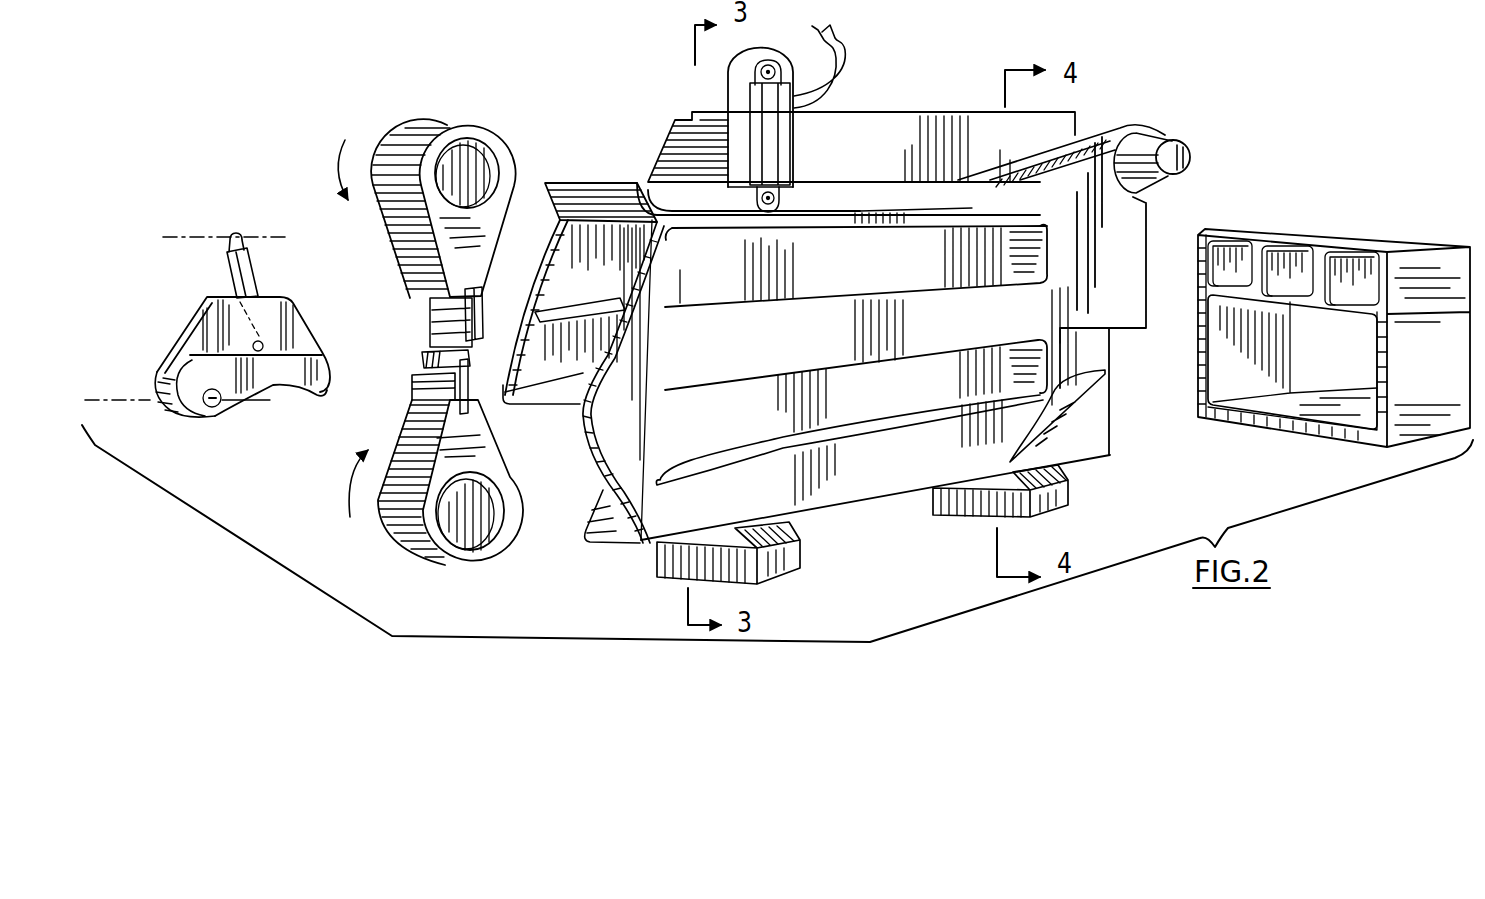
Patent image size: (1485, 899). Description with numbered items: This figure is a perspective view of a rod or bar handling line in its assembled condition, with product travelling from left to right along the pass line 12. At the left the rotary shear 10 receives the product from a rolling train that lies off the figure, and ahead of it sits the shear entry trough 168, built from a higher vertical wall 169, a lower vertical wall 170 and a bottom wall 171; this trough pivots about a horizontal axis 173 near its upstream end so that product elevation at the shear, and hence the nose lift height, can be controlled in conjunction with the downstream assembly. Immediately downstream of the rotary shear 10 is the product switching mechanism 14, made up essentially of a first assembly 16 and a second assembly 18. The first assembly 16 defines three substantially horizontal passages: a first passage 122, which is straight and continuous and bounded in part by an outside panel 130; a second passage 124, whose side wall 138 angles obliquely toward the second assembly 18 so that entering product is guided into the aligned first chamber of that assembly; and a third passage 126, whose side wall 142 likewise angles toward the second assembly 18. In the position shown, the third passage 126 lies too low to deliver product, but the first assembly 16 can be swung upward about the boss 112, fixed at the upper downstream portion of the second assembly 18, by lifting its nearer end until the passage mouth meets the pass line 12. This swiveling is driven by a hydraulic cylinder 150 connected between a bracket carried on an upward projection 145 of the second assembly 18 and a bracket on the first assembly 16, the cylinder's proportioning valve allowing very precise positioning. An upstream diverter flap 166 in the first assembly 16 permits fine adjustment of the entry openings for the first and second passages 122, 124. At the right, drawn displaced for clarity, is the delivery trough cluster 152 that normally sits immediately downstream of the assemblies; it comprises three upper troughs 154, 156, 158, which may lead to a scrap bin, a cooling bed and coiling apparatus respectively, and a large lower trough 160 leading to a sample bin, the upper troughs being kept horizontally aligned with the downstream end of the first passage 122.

The rotary shear 10 is at (420, 568).
The pass line 12 is at (512, 352).
The product switching mechanism 14 is at (1208, 139).
The first assembly 16 is at (1115, 240).
The second assembly 18 is at (886, 130).
The boss 112 is at (1183, 152).
The first substantially horizontal passage 122 is at (583, 373).
The second substantially horizontal passage 124 is at (626, 258).
The third substantially horizontal passage 126 is at (586, 476).
The outside panel 130 is at (903, 322).
The side wall 138 is at (852, 268).
The side wall 142 is at (786, 432).
The projection 145 is at (743, 83).
The hydraulic cylinder 150 is at (788, 138).
The delivery trough cluster 152 is at (1412, 233).
The leftward upper trough 154 is at (1237, 248).
The middle upper trough 156 is at (1298, 258).
The rightward upper trough 158 is at (1358, 264).
The lower trough 160 is at (1358, 378).
The upstream diverter flap 166 is at (612, 313).
The shear entry trough 168 is at (163, 340).
The higher vertical wall 169 is at (207, 320).
The lower vertical wall 170 is at (282, 373).
The bottom wall 171 is at (157, 372).
The horizontal axis 173 is at (152, 400).